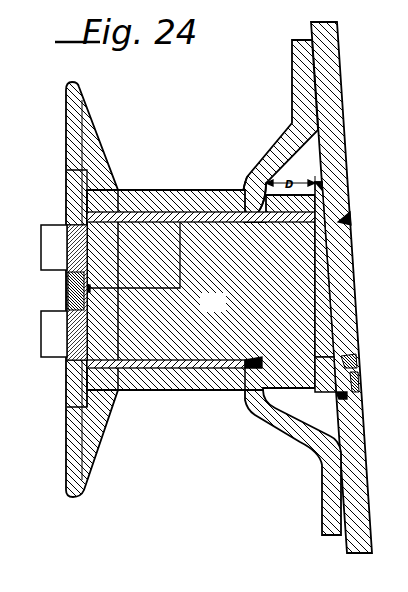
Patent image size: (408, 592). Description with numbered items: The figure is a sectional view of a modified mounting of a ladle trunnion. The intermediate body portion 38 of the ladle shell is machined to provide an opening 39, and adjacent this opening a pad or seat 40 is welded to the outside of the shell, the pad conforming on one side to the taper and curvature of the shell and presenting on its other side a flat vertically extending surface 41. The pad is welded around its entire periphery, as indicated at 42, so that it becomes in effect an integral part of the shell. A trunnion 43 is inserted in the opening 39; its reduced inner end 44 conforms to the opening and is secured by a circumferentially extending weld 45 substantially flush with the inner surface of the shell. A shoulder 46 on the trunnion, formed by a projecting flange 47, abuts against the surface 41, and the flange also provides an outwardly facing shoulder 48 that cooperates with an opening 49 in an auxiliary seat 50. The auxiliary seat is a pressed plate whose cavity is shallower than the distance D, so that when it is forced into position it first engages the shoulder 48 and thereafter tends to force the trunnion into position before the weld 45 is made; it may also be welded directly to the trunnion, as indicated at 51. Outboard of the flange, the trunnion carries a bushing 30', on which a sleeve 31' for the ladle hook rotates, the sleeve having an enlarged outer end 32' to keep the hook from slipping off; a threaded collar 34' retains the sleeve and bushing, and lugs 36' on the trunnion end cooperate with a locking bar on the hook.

The bushing 30' is at (166, 389).
The sleeve 31' is at (201, 195).
The enlarged outer end 32' is at (99, 289).
The threaded collar 34' is at (54, 385).
The lugs 36' is at (46, 292).
The intermediate body portion 38 is at (356, 445).
The opening 39 is at (347, 357).
The pad or seat 40 is at (356, 380).
The flat vertically extending surface 41 is at (323, 389).
The weld 42 is at (340, 394).
The trunnion 43 is at (199, 298).
The reduced inner end 44 is at (346, 250).
The circumferentially extending weld 45 is at (342, 221).
The shoulder 46 is at (323, 197).
The projecting flange 47 is at (289, 385).
The outwardly facing shoulder 48 is at (253, 370).
The opening 49 is at (246, 193).
The auxiliary seat 50 is at (304, 442).
The weld 51 is at (226, 386).